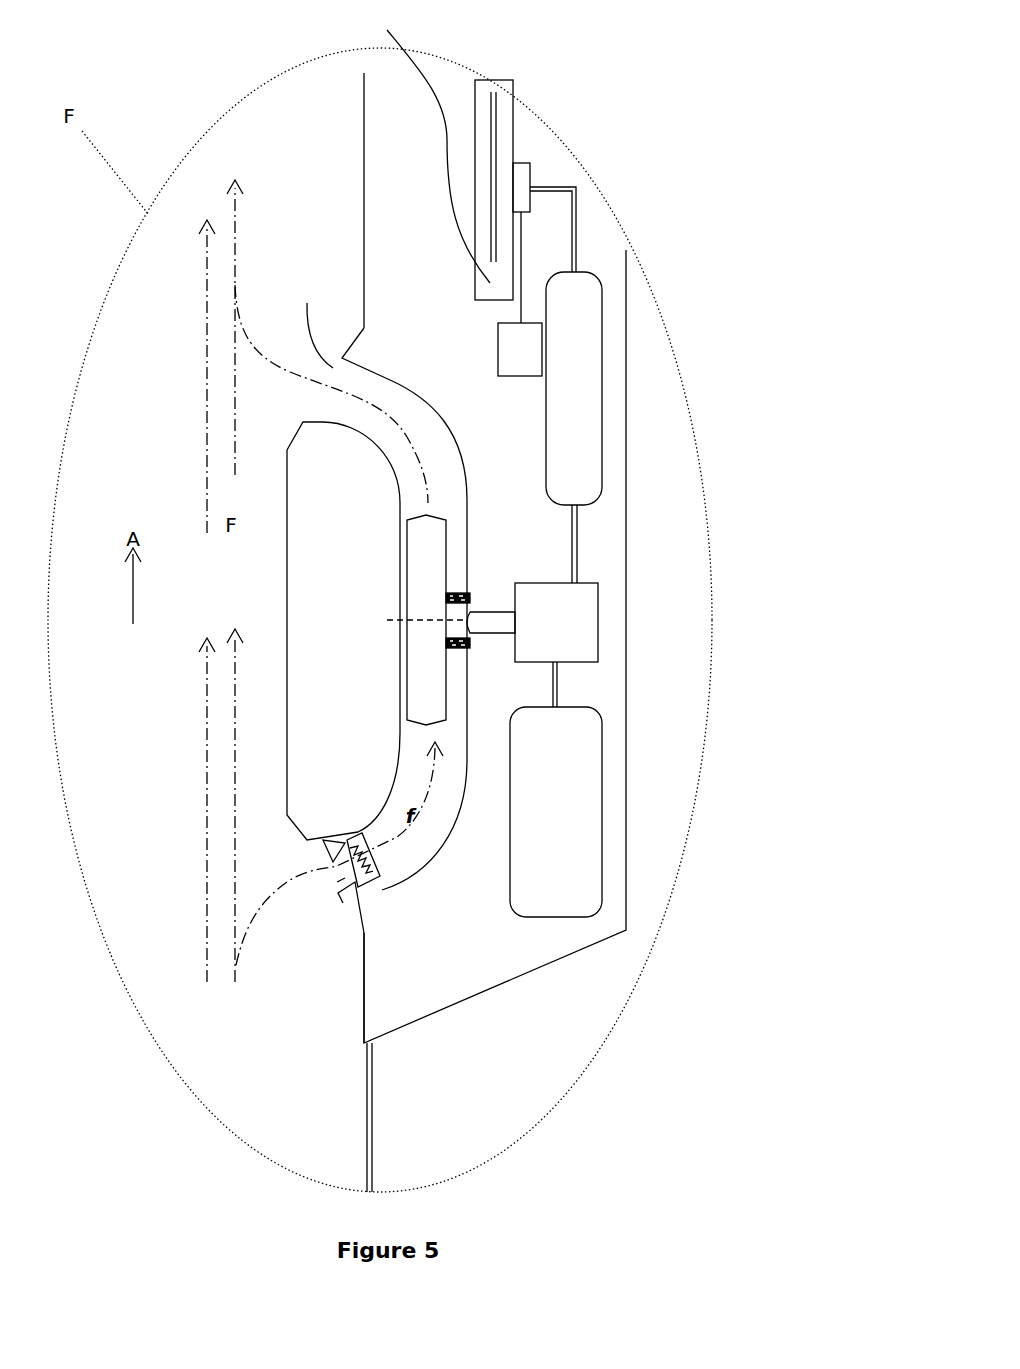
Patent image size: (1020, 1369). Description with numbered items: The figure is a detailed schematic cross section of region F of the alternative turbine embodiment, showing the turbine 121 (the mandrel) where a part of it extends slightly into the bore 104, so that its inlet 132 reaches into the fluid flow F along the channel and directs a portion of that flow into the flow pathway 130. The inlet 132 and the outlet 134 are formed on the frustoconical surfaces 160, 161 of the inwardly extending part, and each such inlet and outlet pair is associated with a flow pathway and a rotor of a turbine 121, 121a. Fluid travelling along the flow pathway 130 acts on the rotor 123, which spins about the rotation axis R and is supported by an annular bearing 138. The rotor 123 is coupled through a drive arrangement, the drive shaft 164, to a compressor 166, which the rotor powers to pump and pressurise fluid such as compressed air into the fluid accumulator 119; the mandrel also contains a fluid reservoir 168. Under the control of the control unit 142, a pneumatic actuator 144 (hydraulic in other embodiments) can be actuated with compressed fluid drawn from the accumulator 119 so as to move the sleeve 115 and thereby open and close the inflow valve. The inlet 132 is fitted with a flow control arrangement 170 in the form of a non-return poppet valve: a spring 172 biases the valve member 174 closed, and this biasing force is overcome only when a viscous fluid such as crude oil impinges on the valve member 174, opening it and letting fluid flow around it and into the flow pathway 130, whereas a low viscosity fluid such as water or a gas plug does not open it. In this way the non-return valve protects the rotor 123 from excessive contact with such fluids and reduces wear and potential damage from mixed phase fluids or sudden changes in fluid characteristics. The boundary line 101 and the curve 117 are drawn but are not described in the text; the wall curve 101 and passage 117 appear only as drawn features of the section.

The outlet duct 101 is at (365, 1123).
The bore 104 is at (162, 712).
The sleeve 115 is at (497, 118).
The bleed flow passage wall 117 is at (420, 143).
The fluid accumulator 119 is at (580, 468).
The turbine 121 is at (407, 287).
The turbine 121a is at (303, 463).
The rotor 123 is at (427, 683).
The flow pathway 130 is at (412, 422).
The inlet 132 is at (337, 882).
The outlet 134 is at (308, 323).
The annular bearing 138 is at (446, 597).
The control unit 142 is at (512, 353).
The pneumatic actuator 144 is at (520, 182).
The frustoconical surface 160 is at (353, 923).
The frustoconical surface 161 is at (352, 340).
The drive shaft 164 is at (493, 620).
The compressor 166 is at (585, 638).
The fluid reservoir 168 is at (582, 882).
The flow control arrangement 170 is at (378, 890).
The spring 172 is at (375, 867).
The valve member 174 is at (343, 903).